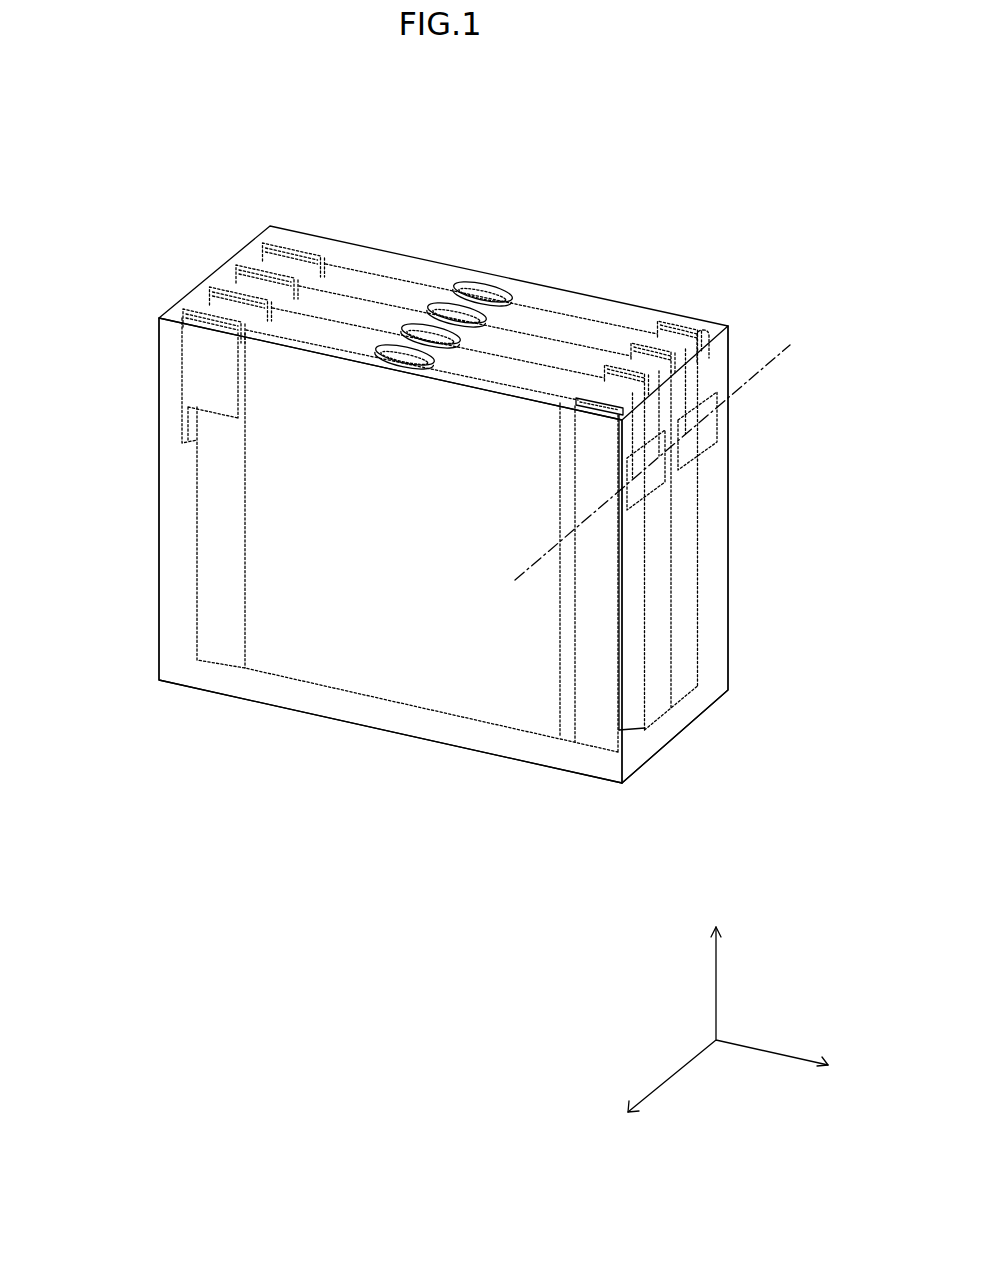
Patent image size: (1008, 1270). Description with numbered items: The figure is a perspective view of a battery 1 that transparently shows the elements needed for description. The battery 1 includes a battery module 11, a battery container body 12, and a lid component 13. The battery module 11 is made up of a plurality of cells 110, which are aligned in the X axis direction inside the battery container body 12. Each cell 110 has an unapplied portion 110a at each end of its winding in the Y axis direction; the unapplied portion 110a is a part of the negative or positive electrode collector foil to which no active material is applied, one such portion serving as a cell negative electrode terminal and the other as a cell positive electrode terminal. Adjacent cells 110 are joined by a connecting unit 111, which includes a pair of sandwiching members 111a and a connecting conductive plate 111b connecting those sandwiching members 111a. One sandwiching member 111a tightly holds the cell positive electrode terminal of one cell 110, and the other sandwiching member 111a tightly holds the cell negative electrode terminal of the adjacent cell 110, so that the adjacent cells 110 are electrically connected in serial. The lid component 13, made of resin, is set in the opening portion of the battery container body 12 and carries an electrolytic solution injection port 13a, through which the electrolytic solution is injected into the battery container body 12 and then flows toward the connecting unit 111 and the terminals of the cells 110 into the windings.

The battery 1 is at (412, 207).
The battery module 11 is at (168, 345).
The battery container body 12 is at (168, 580).
The lid component 13 is at (560, 312).
The electrolytic solution injection port 13a is at (488, 283).
The cell 110 is at (390, 652).
The unapplied portion 110a is at (215, 484).
The connecting unit 111 is at (190, 365).
The sandwiching member 111a is at (603, 442).
The connecting conductive plate 111b is at (650, 482).